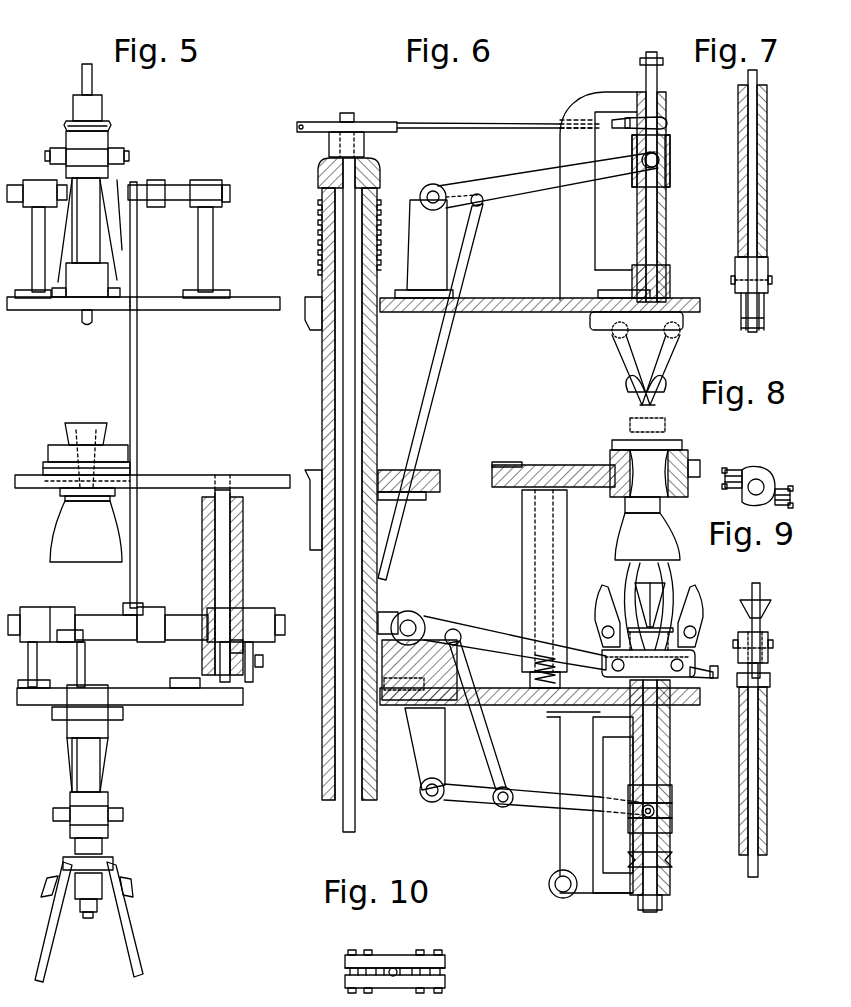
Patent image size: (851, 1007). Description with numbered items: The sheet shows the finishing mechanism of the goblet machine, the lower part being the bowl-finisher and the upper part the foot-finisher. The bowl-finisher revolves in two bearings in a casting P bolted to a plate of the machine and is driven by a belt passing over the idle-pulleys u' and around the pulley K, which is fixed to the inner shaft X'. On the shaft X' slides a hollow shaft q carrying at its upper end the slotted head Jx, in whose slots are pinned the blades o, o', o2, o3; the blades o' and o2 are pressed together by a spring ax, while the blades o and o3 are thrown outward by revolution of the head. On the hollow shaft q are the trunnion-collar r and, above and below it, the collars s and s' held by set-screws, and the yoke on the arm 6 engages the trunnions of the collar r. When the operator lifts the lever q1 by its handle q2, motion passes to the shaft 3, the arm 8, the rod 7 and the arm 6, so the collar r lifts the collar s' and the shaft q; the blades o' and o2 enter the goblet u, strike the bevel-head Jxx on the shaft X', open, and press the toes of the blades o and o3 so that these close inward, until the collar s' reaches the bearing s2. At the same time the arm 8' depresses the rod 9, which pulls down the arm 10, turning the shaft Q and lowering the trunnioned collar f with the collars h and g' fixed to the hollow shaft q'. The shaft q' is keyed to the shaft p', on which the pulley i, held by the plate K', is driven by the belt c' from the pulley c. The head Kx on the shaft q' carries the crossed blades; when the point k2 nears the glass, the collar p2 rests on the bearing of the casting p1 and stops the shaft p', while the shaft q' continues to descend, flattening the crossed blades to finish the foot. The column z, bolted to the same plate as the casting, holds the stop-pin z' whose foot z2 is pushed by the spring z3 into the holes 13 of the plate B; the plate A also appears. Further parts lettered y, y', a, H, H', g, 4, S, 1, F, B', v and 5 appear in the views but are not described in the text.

In FIG. 5, the shaft p' is at (74, 79).
In FIG. 6, the shaft p' is at (674, 177).
In FIG. 7, the shaft p' is at (771, 201).
In FIG. 5, the casting p1 is at (102, 108).
In FIG. 6, the casting p1 is at (605, 196).
In FIG. 5, the pulley i is at (108, 127).
In FIG. 6, the pulley i is at (668, 124).
In FIG. 5, the collar g' is at (95, 151).
In FIG. 6, the collar g' is at (662, 157).
In FIG. 5, the trunnioned collar f is at (102, 156).
In FIG. 6, the trunnioned collar f is at (671, 160).
In FIG. 5, the collar h is at (106, 173).
In FIG. 6, the collar h is at (670, 178).
In FIG. 5, the left frame post y is at (37, 239).
In FIG. 5, the right frame post / block y' is at (143, 509).
In FIG. 6, the right frame post / block y' is at (424, 241).
In FIG. 5, the hollow shaft q' is at (86, 237).
In FIG. 6, the hollow shaft q' is at (683, 227).
In FIG. 7, the hollow shaft q' is at (767, 171).
In FIG. 5, the brace a is at (118, 187).
In FIG. 5, the plate A is at (245, 310).
In FIG. 6, the plate A is at (490, 298).
In FIG. 5, the rod 9 is at (140, 395).
In FIG. 6, the rod 9 is at (430, 392).
In FIG. 5, the cup holder H is at (94, 455).
In FIG. 6, the cup holder H is at (656, 468).
In FIG. 5, the holder plate H' is at (79, 453).
In FIG. 5, the plate g is at (101, 455).
In FIG. 6, the plate g is at (553, 462).
In FIG. 5, the holes 13 is at (225, 478).
In FIG. 6, the holes 13 is at (532, 496).
In FIG. 5, the plate B is at (152, 467).
In FIG. 5, the idle-pulleys u' is at (98, 679).
In FIG. 5, the stop-pin z' is at (207, 582).
In FIG. 6, the stop-pin z' is at (569, 532).
In FIG. 5, the column z is at (228, 586).
In FIG. 6, the column z is at (537, 581).
In FIG. 5, the shaft Q is at (141, 627).
In FIG. 5, the arm 8 is at (45, 616).
In FIG. 6, the arm 8 is at (515, 634).
In FIG. 5, the arm 8' is at (204, 622).
In FIG. 6, the arm 8' is at (417, 645).
In FIG. 5, the pin / post 4 is at (145, 663).
In FIG. 6, the pin / post 4 is at (441, 644).
In FIG. 5, the casting P is at (112, 760).
In FIG. 6, the casting P is at (540, 792).
In FIG. 5, the hollow shaft q is at (87, 765).
In FIG. 6, the hollow shaft q is at (659, 796).
In FIG. 9, the hollow shaft q is at (761, 770).
In FIG. 5, the stop block S is at (104, 843).
In FIG. 5, the pulley K is at (97, 852).
In FIG. 6, the pulley K is at (663, 858).
In FIG. 5, the goblet u is at (89, 921).
In FIG. 6, the pulley c is at (347, 128).
In FIG. 6, the belt c' is at (498, 114).
In FIG. 6, the collar p2 is at (663, 66).
In FIG. 6, the plate K' is at (616, 135).
In FIG. 6, the arm 10 is at (540, 172).
In FIG. 6, the pin 1 is at (510, 184).
In FIG. 6, the head Kx is at (636, 358).
In FIG. 7, the head Kx is at (769, 268).
In FIG. 8, the head Kx is at (766, 471).
In FIG. 6, the point k2 is at (660, 402).
In FIG. 6, the threaded column F is at (372, 395).
In FIG. 6, the plate B' is at (366, 423).
In FIG. 6, the vessel v is at (647, 528).
In FIG. 6, the blade o2 is at (633, 606).
In FIG. 6, the spring ax is at (650, 598).
In FIG. 6, the blade o' is at (675, 606).
In FIG. 9, the blade o' is at (768, 628).
In FIG. 6, the bevel-head Jxx is at (660, 593).
In FIG. 6, the blade o is at (697, 613).
In FIG. 9, the blade o is at (759, 613).
In FIG. 6, the blade o3 is at (605, 608).
In FIG. 6, the slotted head Jx is at (648, 654).
In FIG. 9, the slotted head Jx is at (759, 650).
In FIG. 10, the slotted head Jx is at (397, 955).
In FIG. 6, the handle q2 is at (708, 680).
In FIG. 6, the shaft 3 is at (408, 628).
In FIG. 6, the lever q1 is at (498, 660).
In FIG. 6, the foot z2 is at (533, 673).
In FIG. 6, the spring z3 is at (528, 680).
In FIG. 6, the link 5 is at (425, 755).
In FIG. 6, the rod 7 is at (477, 715).
In FIG. 6, the arm 6 is at (544, 799).
In FIG. 6, the inner shaft X' is at (633, 845).
In FIG. 9, the inner shaft X' is at (776, 865).
In FIG. 6, the bearing s2 is at (670, 742).
In FIG. 6, the collar s' is at (663, 792).
In FIG. 6, the trunnion-collar r is at (672, 810).
In FIG. 6, the collar s is at (660, 828).